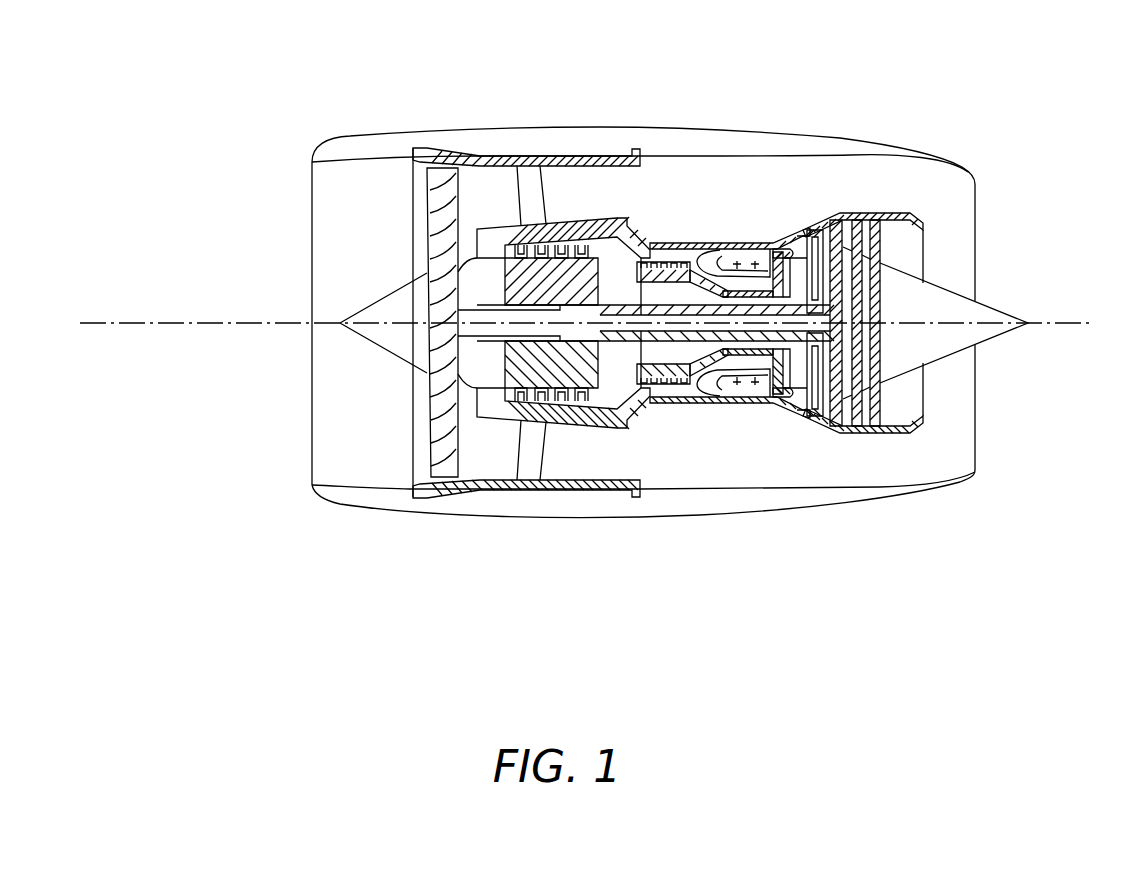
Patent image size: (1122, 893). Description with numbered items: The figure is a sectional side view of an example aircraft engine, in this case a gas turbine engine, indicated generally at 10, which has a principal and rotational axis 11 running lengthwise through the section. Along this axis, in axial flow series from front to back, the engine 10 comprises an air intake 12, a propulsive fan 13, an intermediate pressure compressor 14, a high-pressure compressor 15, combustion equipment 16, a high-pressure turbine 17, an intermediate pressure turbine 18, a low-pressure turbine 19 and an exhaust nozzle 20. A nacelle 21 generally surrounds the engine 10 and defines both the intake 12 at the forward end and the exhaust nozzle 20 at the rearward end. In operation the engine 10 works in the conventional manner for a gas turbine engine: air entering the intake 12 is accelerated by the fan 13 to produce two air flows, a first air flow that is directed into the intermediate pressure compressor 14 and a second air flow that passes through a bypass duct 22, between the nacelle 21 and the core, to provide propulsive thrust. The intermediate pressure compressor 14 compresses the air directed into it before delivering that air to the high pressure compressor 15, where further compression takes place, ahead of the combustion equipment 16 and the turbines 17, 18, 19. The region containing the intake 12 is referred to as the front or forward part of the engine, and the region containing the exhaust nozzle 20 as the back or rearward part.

The gas turbine engine 10 is at (281, 216).
The principal and rotational axis 11 is at (294, 322).
The air intake 12 is at (377, 161).
The propulsive fan 13 is at (428, 435).
The intermediate pressure compressor 14 is at (549, 400).
The high-pressure compressor 15 is at (663, 264).
The combustion equipment 16 is at (740, 384).
The high-pressure turbine 17 is at (781, 400).
The intermediate pressure turbine 18 is at (817, 235).
The low-pressure turbine 19 is at (836, 410).
The exhaust nozzle 20 is at (975, 461).
The nacelle 21 is at (818, 138).
The bypass duct 22 is at (580, 204).